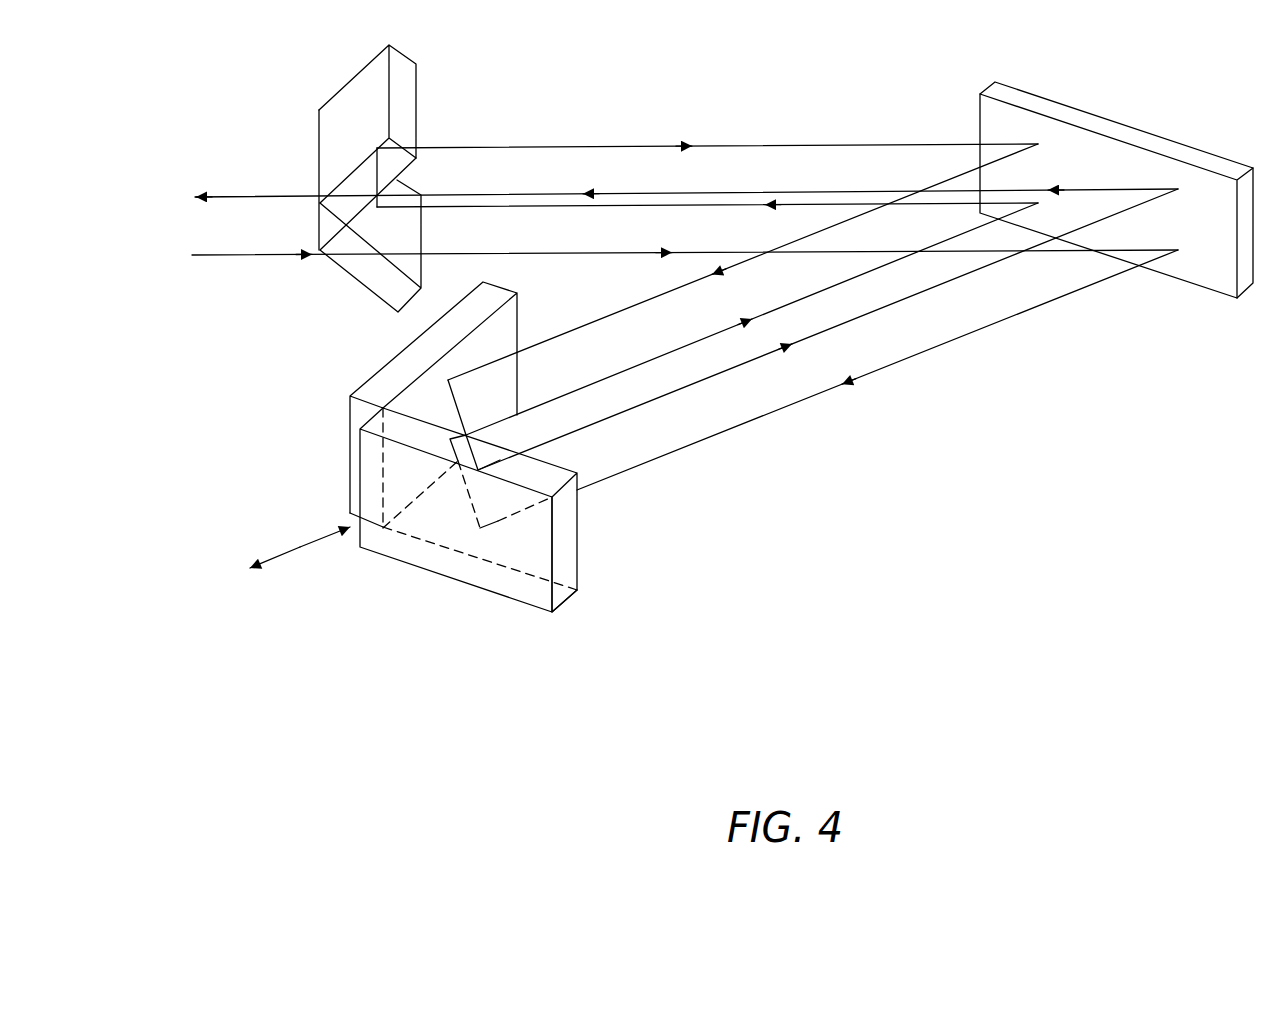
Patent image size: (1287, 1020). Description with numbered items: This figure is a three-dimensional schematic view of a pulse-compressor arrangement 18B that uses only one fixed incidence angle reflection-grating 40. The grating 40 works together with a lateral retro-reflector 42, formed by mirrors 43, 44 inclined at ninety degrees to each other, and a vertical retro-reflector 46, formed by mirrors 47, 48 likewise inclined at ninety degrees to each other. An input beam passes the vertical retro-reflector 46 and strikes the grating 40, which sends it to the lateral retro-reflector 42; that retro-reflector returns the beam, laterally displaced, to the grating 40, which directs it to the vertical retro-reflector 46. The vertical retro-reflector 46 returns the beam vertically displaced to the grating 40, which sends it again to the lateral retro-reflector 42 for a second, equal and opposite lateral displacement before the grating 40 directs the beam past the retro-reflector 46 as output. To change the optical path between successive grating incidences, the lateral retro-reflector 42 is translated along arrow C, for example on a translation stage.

The pulse-compressor arrangement 18B is at (1000, 643).
The reflection-grating 40 is at (1208, 270).
The lateral retro-reflector 42 is at (403, 590).
The mirror 43 is at (570, 560).
The mirror 44 is at (405, 370).
The vertical retro-reflector 46 is at (361, 178).
The mirror 47 is at (390, 270).
The mirror 48 is at (408, 110).